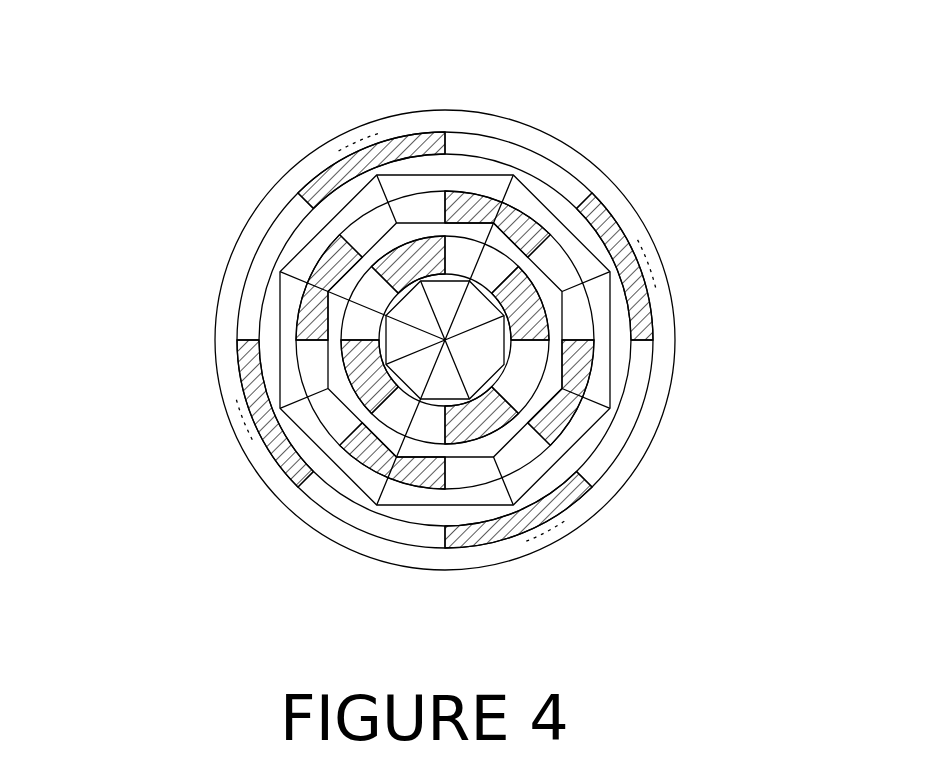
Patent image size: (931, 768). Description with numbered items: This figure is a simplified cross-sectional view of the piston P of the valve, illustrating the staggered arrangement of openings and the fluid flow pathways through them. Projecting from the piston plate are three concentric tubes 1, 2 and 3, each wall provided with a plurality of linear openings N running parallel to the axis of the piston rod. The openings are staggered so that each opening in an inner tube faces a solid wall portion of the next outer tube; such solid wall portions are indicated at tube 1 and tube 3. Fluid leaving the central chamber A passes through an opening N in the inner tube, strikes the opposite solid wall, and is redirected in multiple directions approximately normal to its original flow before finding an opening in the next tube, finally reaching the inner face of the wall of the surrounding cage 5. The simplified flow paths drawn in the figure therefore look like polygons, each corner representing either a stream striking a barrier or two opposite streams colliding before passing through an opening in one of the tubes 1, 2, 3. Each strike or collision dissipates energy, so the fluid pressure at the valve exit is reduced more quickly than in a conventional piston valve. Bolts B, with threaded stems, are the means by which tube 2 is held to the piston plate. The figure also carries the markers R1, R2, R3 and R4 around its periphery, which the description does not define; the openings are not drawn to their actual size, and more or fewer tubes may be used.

The piston P is at (446, 113).
The cage 5 is at (446, 571).
The concentric tube 2 is at (277, 241).
The concentric tube 1 is at (687, 228).
The bolts B is at (357, 137).
The linear openings N is at (548, 183).
The concentric tube 3 is at (350, 353).
The chamber A is at (483, 342).
The rotation direction arrow R1 is at (513, 175).
The rotation direction arrow R2 is at (610, 408).
The rotation direction arrow R3 is at (377, 505).
The rotation direction arrow R4 is at (280, 272).